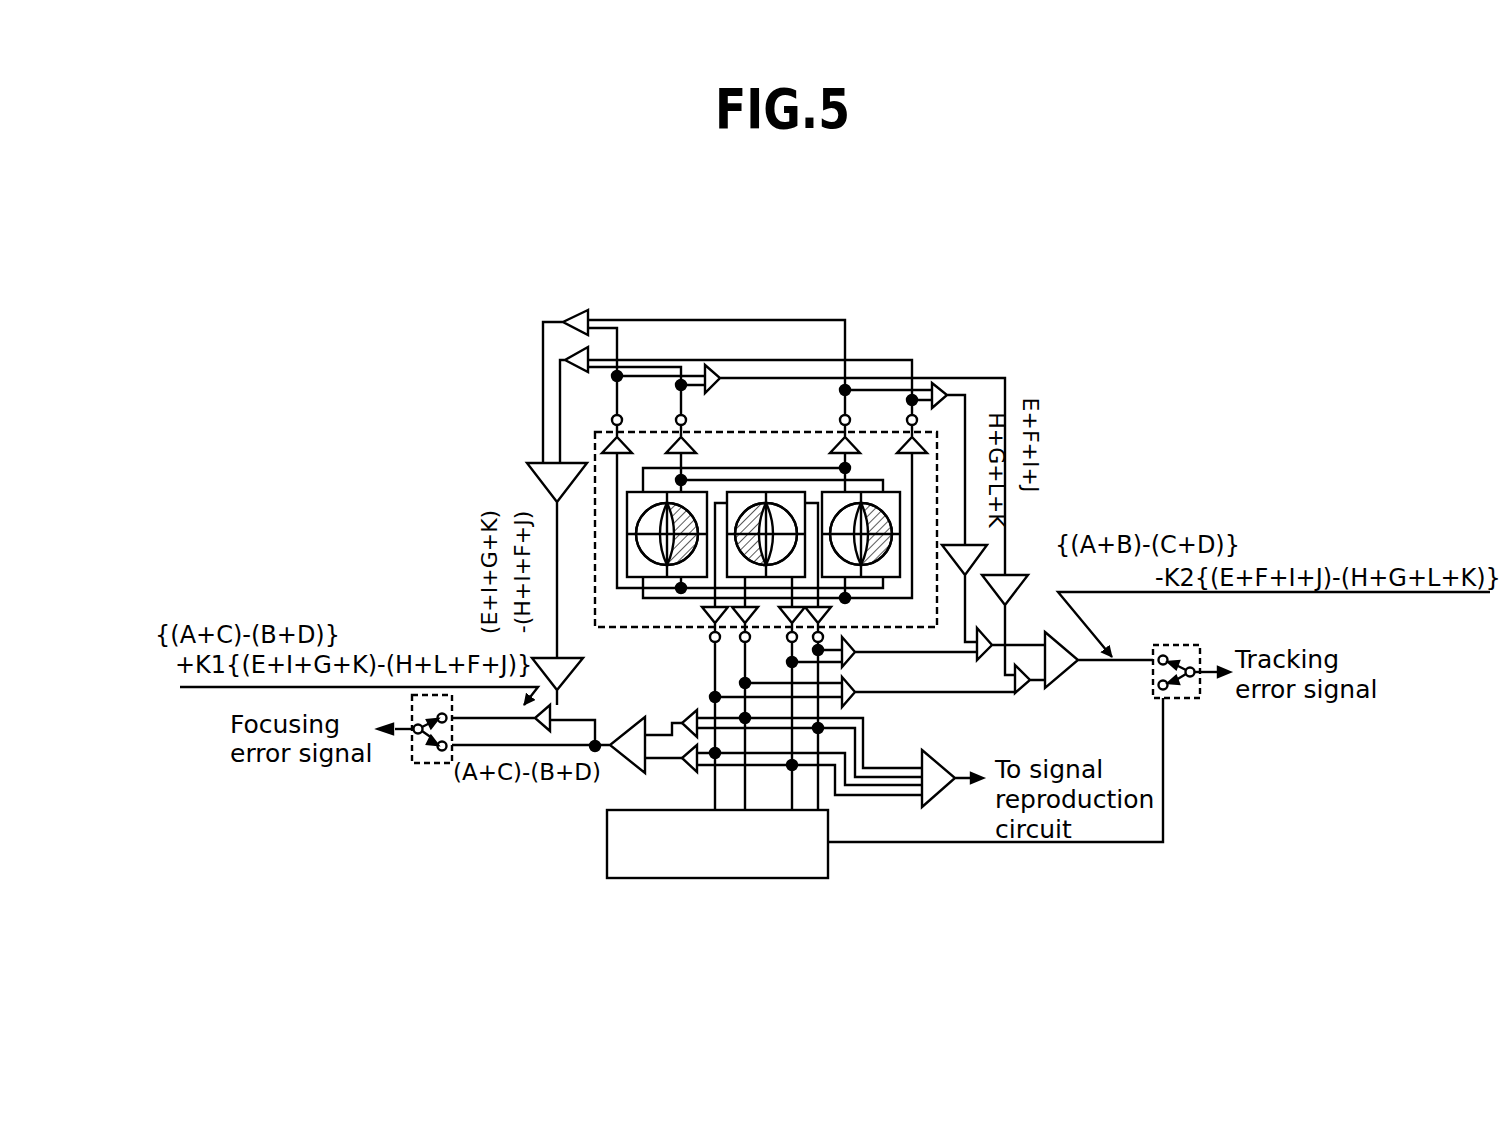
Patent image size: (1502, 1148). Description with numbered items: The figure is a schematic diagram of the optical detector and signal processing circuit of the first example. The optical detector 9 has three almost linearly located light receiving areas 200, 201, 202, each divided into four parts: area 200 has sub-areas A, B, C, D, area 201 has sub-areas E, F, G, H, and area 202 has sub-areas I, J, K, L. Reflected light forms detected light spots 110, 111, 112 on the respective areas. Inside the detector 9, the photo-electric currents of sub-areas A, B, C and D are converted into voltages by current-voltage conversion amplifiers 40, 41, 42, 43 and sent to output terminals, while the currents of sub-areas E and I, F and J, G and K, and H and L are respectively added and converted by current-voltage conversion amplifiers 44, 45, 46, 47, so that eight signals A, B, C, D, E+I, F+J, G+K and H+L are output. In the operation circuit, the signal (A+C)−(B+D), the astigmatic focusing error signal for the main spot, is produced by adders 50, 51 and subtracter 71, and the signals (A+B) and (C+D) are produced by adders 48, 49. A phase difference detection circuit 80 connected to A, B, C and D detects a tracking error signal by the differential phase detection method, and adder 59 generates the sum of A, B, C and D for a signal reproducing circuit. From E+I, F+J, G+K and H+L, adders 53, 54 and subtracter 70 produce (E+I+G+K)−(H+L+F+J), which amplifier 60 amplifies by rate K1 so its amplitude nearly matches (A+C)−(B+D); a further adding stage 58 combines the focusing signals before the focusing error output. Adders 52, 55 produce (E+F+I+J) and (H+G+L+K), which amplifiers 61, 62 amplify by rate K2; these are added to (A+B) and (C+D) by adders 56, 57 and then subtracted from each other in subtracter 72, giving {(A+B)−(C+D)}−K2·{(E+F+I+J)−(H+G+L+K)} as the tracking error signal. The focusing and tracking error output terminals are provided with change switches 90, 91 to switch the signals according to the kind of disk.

The optical detector 9 is at (938, 452).
The current-voltage conversion amplifier 40 is at (836, 610).
The current-voltage conversion amplifier 41 is at (786, 627).
The current-voltage conversion amplifier 42 is at (704, 626).
The current-voltage conversion amplifier 43 is at (700, 610).
The current-voltage conversion amplifier 44 is at (700, 450).
The current-voltage conversion amplifier 45 is at (602, 443).
The current-voltage conversion amplifier 46 is at (925, 440).
The current-voltage conversion amplifier 47 is at (833, 450).
The adder 48 is at (858, 668).
The adder 49 is at (850, 708).
The adder 50 is at (690, 712).
The adder 51 is at (692, 768).
The adder 52 is at (716, 368).
The adder 53 is at (565, 352).
The adder 54 is at (575, 312).
The adder 55 is at (938, 383).
The adder 56 is at (984, 662).
The adder 57 is at (1018, 696).
The adder 58 is at (560, 706).
The adder 59 is at (927, 750).
The amplifier 60 is at (572, 656).
The amplifier 61 is at (988, 545).
The amplifier 62 is at (1012, 575).
The subtracter 70 is at (525, 460).
The subtracter 71 is at (618, 722).
The subtracter 72 is at (1065, 692).
The phase difference detection circuit 80 is at (725, 879).
The change switch 90 is at (419, 765).
The change switch 91 is at (1185, 700).
The detected light spot 110 is at (776, 500).
The detected light spot 111 is at (876, 500).
The detected light spot 112 is at (645, 548).
The light receiving area 200 is at (750, 495).
The light receiving area 201 is at (895, 527).
The light receiving area 202 is at (680, 490).